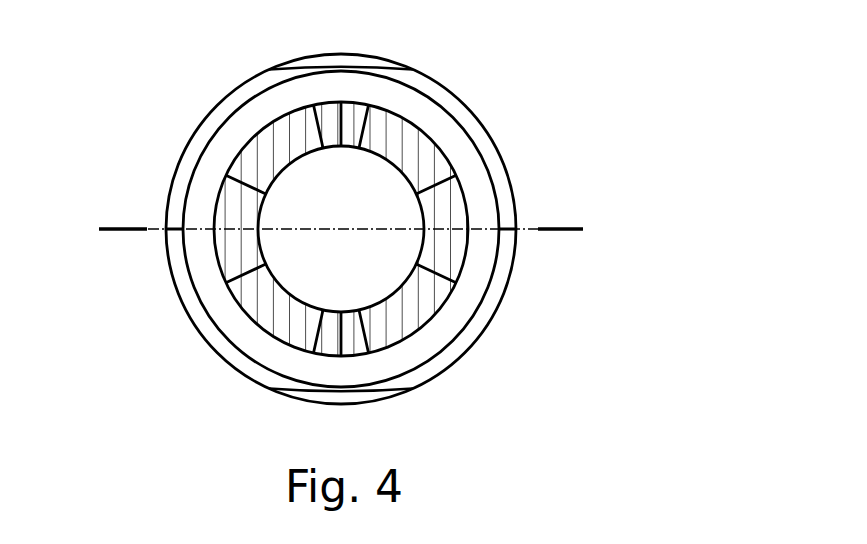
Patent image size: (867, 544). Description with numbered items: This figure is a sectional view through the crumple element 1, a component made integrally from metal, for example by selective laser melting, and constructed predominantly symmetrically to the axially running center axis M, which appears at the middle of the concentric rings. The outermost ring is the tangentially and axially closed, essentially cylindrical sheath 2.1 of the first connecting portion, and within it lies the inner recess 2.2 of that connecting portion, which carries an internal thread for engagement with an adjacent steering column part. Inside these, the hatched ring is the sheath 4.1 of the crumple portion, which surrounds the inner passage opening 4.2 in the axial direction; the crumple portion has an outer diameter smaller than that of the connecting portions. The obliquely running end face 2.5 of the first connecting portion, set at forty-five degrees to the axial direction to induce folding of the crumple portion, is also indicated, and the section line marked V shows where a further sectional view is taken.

The crumple element 1 is at (370, 227).
The sheath of the first connecting portion 2.1 is at (497, 122).
The inner recess 2.2 is at (434, 229).
The end face 2.5 is at (252, 347).
The sheath of the crumple portion 4.1 is at (212, 272).
The inner passage opening 4.2 is at (397, 246).
The center axis M is at (338, 227).
The section line V- V is at (560, 220).